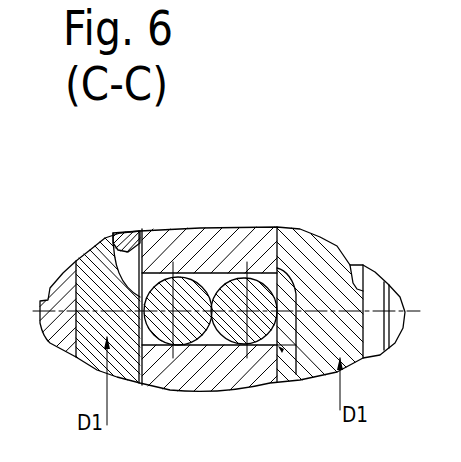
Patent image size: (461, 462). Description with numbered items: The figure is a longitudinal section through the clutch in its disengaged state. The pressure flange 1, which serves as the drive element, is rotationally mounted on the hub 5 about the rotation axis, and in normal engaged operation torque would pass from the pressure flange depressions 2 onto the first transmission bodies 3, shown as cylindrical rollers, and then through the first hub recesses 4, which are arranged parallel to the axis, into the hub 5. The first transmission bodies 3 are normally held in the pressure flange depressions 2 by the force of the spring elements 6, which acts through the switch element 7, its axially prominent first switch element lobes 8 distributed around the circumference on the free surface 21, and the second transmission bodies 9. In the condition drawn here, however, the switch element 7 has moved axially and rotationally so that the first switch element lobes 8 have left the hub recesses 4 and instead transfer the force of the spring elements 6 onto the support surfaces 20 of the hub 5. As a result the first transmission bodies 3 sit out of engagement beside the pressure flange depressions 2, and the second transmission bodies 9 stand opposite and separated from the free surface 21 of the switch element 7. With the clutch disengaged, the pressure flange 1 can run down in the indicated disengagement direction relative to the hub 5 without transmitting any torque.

The pressure flange 1 is at (61, 254).
The pressure flange depressions 2 is at (117, 201).
The first transmission bodies 3 is at (208, 268).
The first hub recesses 4 is at (210, 248).
The hub 5 is at (209, 212).
The spring elements 6 is at (414, 288).
The switch element 7 is at (339, 266).
The first switch element lobes 8 is at (313, 262).
The second transmission bodies 9 is at (289, 266).
The support surfaces 20 is at (367, 321).
The free surface 21 is at (299, 366).